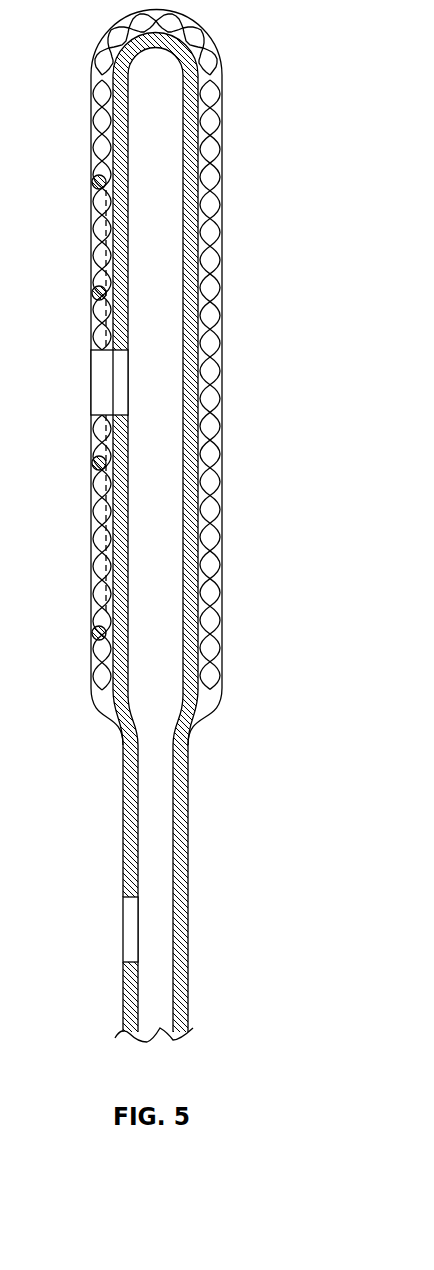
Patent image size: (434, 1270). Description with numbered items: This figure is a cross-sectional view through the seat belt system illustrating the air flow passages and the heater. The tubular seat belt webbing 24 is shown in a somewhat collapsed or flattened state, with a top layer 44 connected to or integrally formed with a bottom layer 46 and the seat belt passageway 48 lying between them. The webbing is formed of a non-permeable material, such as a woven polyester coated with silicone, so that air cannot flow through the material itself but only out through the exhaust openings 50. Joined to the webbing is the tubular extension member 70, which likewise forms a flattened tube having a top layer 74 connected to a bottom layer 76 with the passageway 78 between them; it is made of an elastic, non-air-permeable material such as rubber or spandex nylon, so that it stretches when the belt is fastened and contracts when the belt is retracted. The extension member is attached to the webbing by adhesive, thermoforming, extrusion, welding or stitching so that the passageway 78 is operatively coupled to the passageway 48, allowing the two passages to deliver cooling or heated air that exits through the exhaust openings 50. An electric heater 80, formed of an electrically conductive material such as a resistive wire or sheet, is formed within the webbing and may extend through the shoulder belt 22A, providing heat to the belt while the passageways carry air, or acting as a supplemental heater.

The tubular seat belt webbing 24 is at (197, 32).
The seat belt passageway 48 is at (153, 117).
The shoulder belt 22A is at (222, 158).
The electric heater 80 is at (92, 185).
The top layer 44 is at (87, 320).
The exhaust openings 50 is at (102, 383).
The bottom layer 46 is at (222, 415).
The passageway 78 is at (153, 833).
The tubular extension member 70 is at (188, 860).
The bottom layer 76 is at (188, 968).
The top layer 74 is at (123, 992).